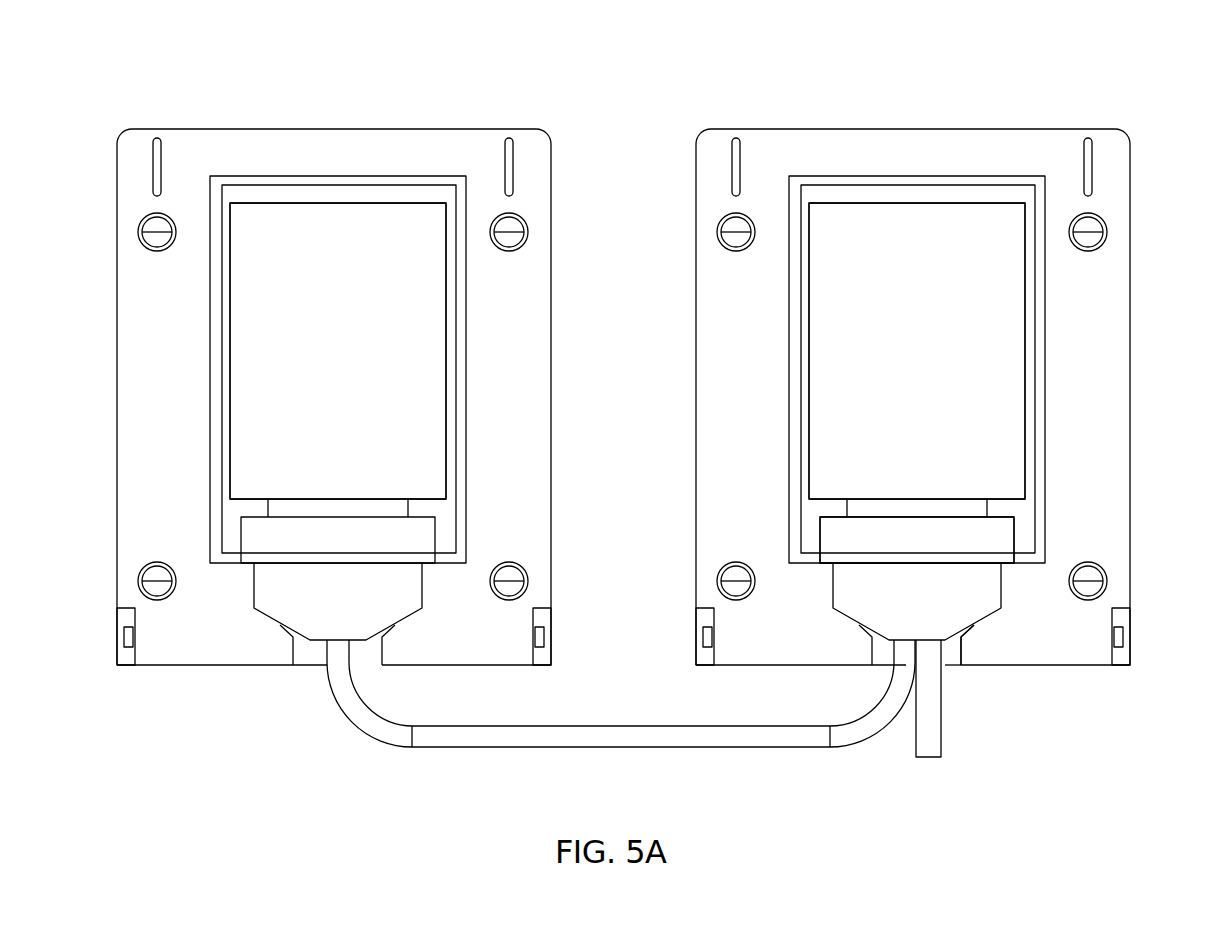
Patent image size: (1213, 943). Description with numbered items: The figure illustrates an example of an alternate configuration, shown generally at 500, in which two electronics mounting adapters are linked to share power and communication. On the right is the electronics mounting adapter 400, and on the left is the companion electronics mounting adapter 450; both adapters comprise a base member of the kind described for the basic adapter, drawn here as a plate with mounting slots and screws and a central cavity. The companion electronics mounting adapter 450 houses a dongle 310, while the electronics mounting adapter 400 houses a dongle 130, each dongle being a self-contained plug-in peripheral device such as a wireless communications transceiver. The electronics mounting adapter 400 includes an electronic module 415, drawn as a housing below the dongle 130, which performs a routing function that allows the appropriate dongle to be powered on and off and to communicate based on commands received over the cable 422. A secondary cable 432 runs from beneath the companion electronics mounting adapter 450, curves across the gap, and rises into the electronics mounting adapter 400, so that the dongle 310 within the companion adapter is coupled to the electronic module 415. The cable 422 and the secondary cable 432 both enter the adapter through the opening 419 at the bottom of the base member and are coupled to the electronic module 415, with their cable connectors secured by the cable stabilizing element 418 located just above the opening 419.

The alternate configuration 500 is at (1130, 108).
The companion electronics mounting adapter 450 is at (110, 245).
The electronics mounting adapter 400 is at (685, 245).
The dongle 310 is at (362, 375).
The dongle 130 is at (941, 375).
The electronic module 415 is at (1015, 531).
The cable stabilizing element 418 is at (963, 641).
The opening 419 is at (953, 670).
The secondary cable 432 is at (621, 747).
The cable 422 is at (928, 757).